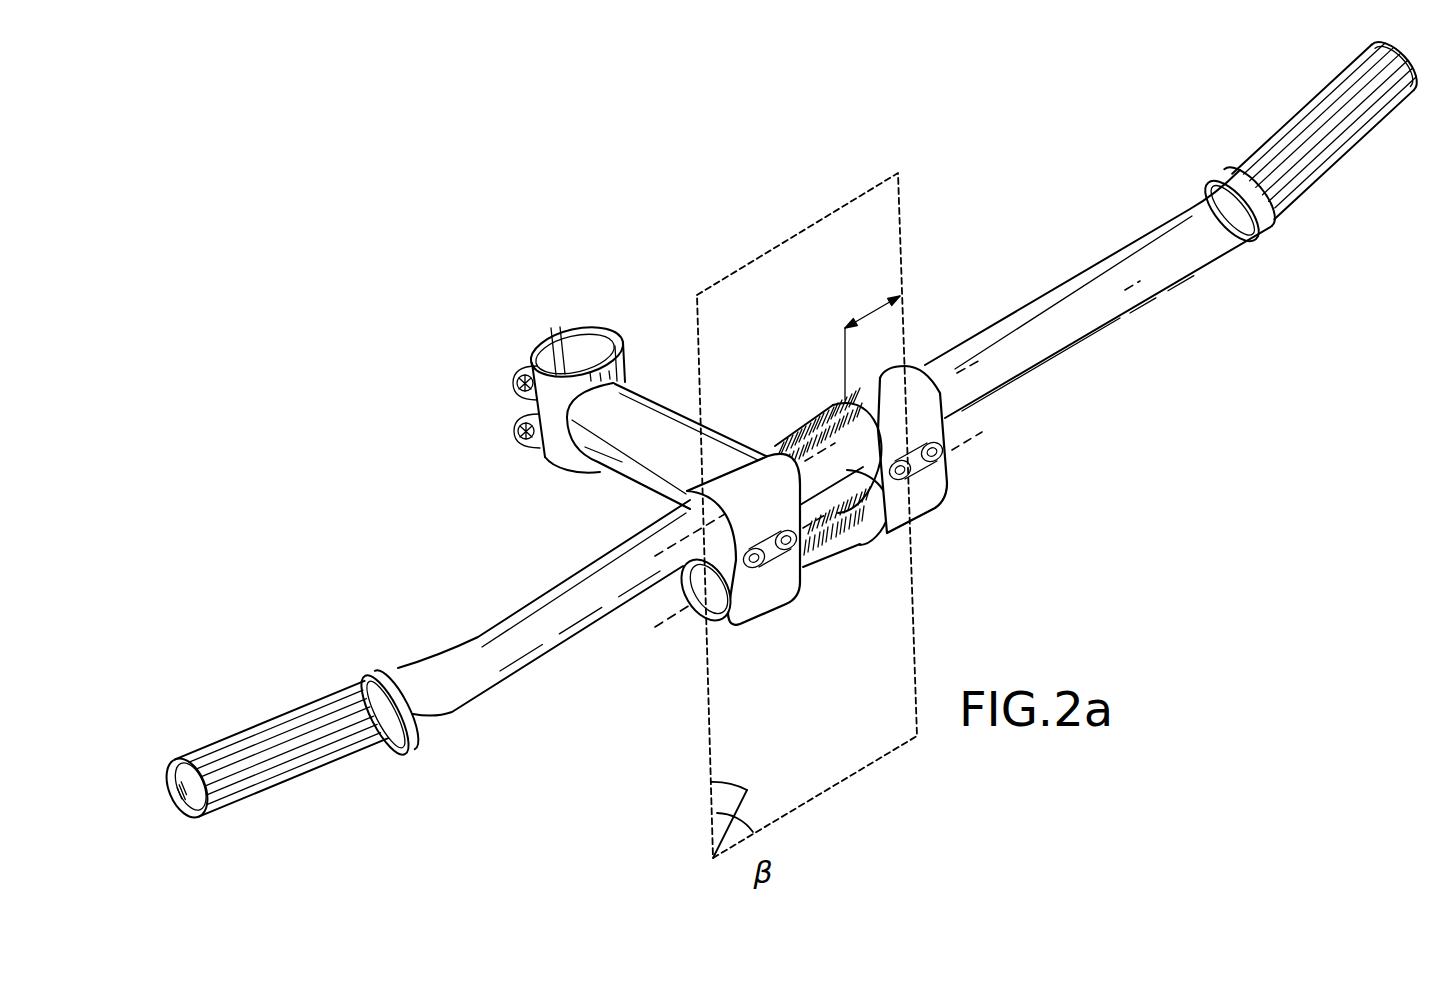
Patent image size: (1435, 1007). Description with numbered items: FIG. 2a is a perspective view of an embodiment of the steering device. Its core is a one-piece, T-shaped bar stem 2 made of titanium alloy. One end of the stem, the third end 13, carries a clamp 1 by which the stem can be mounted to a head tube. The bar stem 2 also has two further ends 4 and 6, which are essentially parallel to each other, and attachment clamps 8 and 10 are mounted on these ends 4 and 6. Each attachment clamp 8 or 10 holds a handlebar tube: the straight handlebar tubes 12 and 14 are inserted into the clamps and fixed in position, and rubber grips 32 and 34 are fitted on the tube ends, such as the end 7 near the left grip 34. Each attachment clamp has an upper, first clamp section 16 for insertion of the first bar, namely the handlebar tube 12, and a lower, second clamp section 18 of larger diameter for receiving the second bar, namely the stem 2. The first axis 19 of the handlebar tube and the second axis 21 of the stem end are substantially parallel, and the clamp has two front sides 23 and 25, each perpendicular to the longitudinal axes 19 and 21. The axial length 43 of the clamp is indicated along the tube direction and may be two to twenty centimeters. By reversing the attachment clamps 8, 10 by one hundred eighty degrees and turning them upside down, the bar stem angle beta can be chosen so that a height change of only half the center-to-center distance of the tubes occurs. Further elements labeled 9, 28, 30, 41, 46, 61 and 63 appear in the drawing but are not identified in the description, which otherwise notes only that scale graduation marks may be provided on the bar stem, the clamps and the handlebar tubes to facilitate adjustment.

The clamp 1 is at (624, 366).
The bar stem 2 is at (652, 404).
The end of bar stem 4 is at (952, 470).
The end of bar stem 6 is at (700, 612).
The end of handlebar tube 7 is at (437, 715).
The attachment clamp 8 is at (927, 506).
The grip ring 9 is at (1247, 222).
The attachment clamp 10 is at (760, 532).
The handlebar tube 12 is at (961, 354).
The third end 13 is at (627, 463).
The handlebar tube 14 is at (457, 646).
The first clamp section 16 is at (840, 400).
The second clamp section 18 is at (724, 626).
The first axis 19 is at (666, 550).
The second axis 21 is at (668, 630).
The front side 23 is at (760, 555).
The front side 25 is at (815, 548).
The serrated disc 28 is at (828, 428).
The clamp body 30 is at (780, 455).
The rubber grip 32 is at (1306, 110).
The rubber grip 34 is at (291, 722).
The adjustment plane 41 is at (770, 251).
The axial length 43 is at (870, 318).
The serrations 46 is at (788, 412).
The fasteners 61 is at (718, 640).
The clamp arm 63 is at (795, 584).